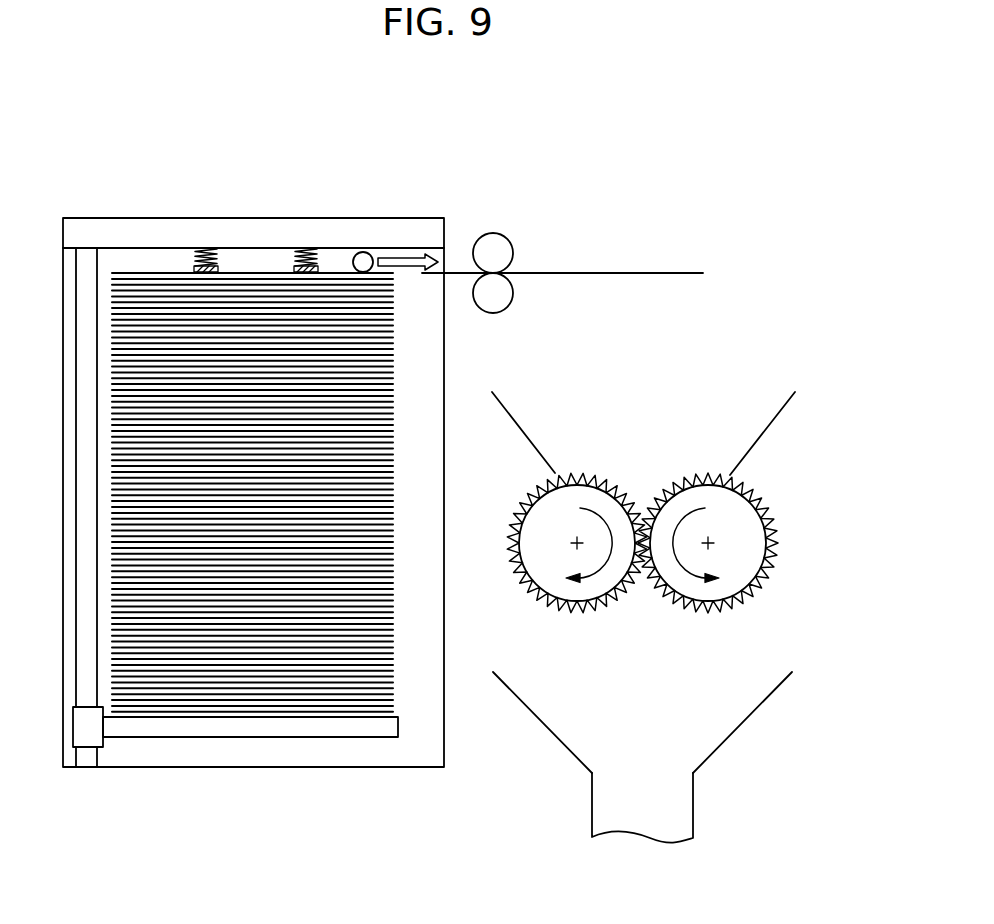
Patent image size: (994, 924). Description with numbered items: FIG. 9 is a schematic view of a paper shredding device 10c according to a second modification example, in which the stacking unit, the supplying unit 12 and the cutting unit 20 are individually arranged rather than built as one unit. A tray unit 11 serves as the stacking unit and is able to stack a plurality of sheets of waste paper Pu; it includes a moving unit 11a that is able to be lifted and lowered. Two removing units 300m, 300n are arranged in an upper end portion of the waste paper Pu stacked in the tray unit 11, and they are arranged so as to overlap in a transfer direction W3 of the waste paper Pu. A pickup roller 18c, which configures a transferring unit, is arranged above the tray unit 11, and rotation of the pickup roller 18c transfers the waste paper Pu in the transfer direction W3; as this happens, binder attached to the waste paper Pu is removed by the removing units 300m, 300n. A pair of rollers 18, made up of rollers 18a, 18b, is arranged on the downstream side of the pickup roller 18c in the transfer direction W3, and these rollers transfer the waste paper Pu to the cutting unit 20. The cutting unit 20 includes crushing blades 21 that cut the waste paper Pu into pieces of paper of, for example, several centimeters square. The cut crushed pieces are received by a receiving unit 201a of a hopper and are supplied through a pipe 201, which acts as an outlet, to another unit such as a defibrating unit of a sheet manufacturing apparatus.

The paper shredding device 10c is at (688, 108).
The tray unit 11 is at (178, 760).
The moving unit 11a is at (290, 728).
The waste paper Pu is at (373, 430).
The removing unit 300m is at (193, 270).
The removing unit 300n is at (297, 270).
The pickup roller 18c is at (356, 254).
The supplying unit 12 is at (371, 240).
The transfer direction W3 is at (418, 255).
The pair of rollers 18 is at (519, 231).
The roller 18a is at (498, 243).
The roller 18b is at (505, 295).
The cutting unit 20 is at (649, 528).
The crushing blades 21 is at (550, 583).
The pipe 201 is at (644, 757).
The receiving unit 201a is at (752, 698).